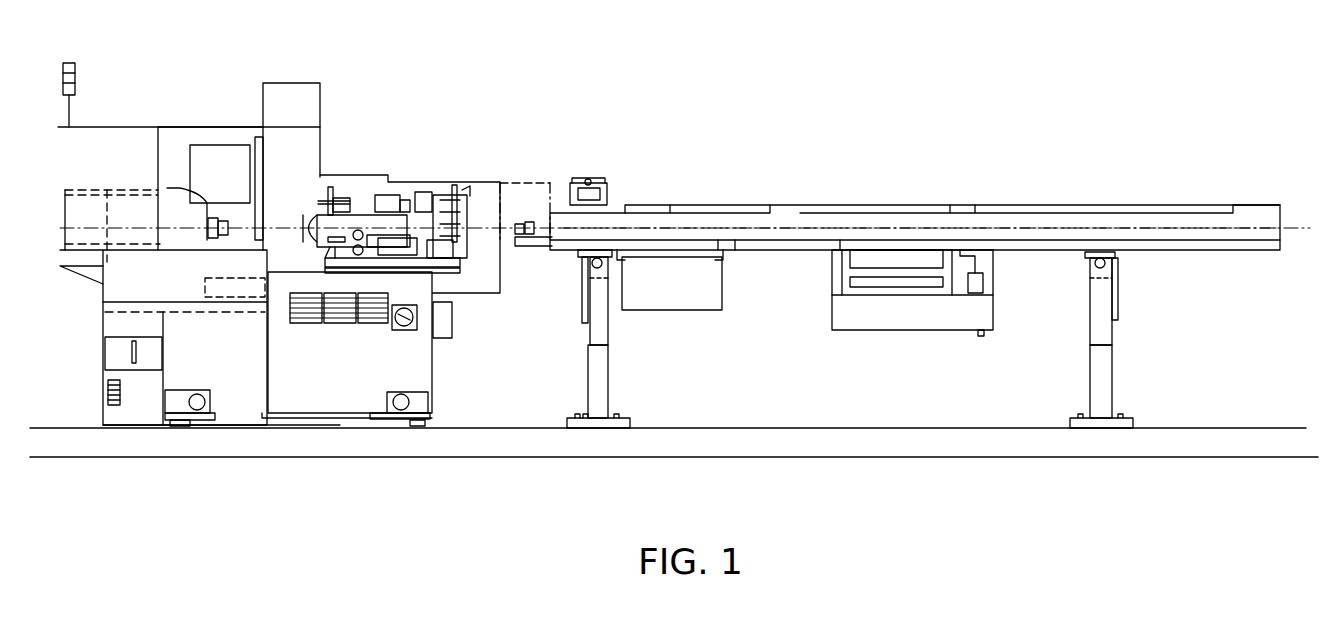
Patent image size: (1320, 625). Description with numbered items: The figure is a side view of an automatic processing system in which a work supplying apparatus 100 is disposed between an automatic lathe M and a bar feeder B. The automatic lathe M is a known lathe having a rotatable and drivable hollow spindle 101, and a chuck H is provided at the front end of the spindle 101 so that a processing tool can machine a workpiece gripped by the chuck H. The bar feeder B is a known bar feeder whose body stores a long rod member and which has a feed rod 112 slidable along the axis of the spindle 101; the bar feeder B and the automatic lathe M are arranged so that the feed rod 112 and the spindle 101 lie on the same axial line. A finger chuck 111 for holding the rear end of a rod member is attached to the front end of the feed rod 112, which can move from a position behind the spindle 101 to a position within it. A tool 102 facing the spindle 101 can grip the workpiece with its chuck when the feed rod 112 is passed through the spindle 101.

The work supplying apparatus 100 is at (659, 57).
The spindle 101 is at (357, 220).
The tool 102 is at (173, 195).
The finger chuck 111 is at (519, 220).
The feed rod 112 is at (543, 220).
The bar feeder B is at (935, 210).
The chuck H is at (292, 227).
The automatic lathe M is at (368, 68).